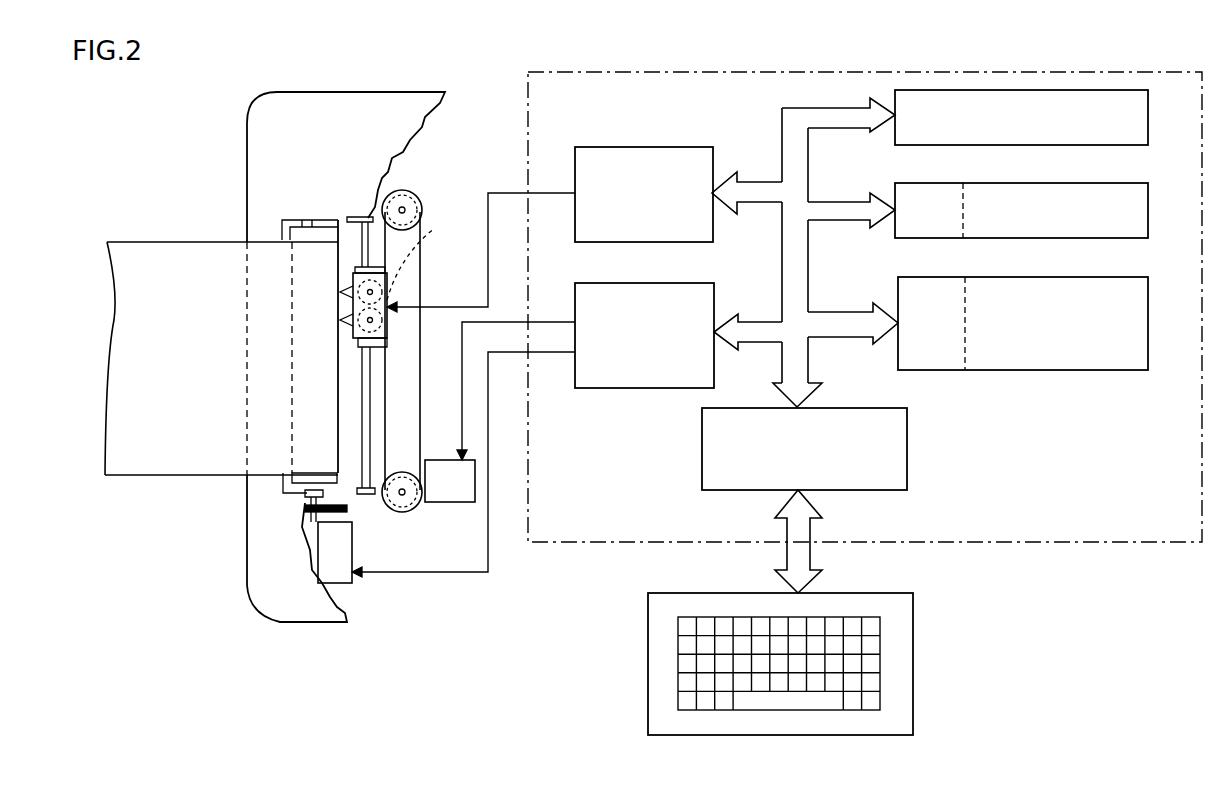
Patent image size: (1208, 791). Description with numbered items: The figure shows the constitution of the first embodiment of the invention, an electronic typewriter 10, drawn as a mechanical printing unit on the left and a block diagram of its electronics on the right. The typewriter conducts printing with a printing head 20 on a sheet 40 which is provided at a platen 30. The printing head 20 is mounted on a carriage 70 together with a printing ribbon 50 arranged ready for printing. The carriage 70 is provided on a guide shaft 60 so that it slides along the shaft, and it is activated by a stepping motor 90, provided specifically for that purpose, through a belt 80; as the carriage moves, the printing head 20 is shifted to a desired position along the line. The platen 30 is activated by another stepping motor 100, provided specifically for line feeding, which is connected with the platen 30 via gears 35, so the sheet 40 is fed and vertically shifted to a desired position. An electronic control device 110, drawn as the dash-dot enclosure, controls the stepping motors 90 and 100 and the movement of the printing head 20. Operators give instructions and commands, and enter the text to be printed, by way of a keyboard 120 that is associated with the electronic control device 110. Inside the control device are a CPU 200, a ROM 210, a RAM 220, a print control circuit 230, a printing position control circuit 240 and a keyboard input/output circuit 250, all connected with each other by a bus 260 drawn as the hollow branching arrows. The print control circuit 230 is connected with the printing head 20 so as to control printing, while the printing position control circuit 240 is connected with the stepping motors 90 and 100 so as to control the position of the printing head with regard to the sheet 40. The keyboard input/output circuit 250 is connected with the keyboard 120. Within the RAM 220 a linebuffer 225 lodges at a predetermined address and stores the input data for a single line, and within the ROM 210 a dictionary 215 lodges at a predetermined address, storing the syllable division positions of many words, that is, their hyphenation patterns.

The electronic typewriter 10 is at (334, 64).
The printing head 20 is at (350, 297).
The platen 30 is at (302, 220).
The gears 35 is at (347, 508).
The sheet 40 is at (218, 465).
The printing ribbon 50 is at (421, 261).
The guide shaft 60 is at (365, 415).
The carriage 70 is at (347, 217).
The belt 80 is at (420, 390).
The stepping motor 90 is at (443, 502).
The stepping motor 100 is at (347, 583).
The electronic control device 110 is at (843, 72).
The keyboard 120 is at (648, 630).
The CPU 200 is at (1148, 118).
The ROM 210 is at (947, 238).
The dictionary 215 is at (1140, 208).
The RAM 220 is at (950, 370).
The linebuffer 225 is at (1148, 322).
The print control circuit 230 is at (615, 147).
The printing position control circuit 240 is at (612, 388).
The keyboard input/output circuit 250 is at (907, 450).
The bus 260 is at (780, 118).